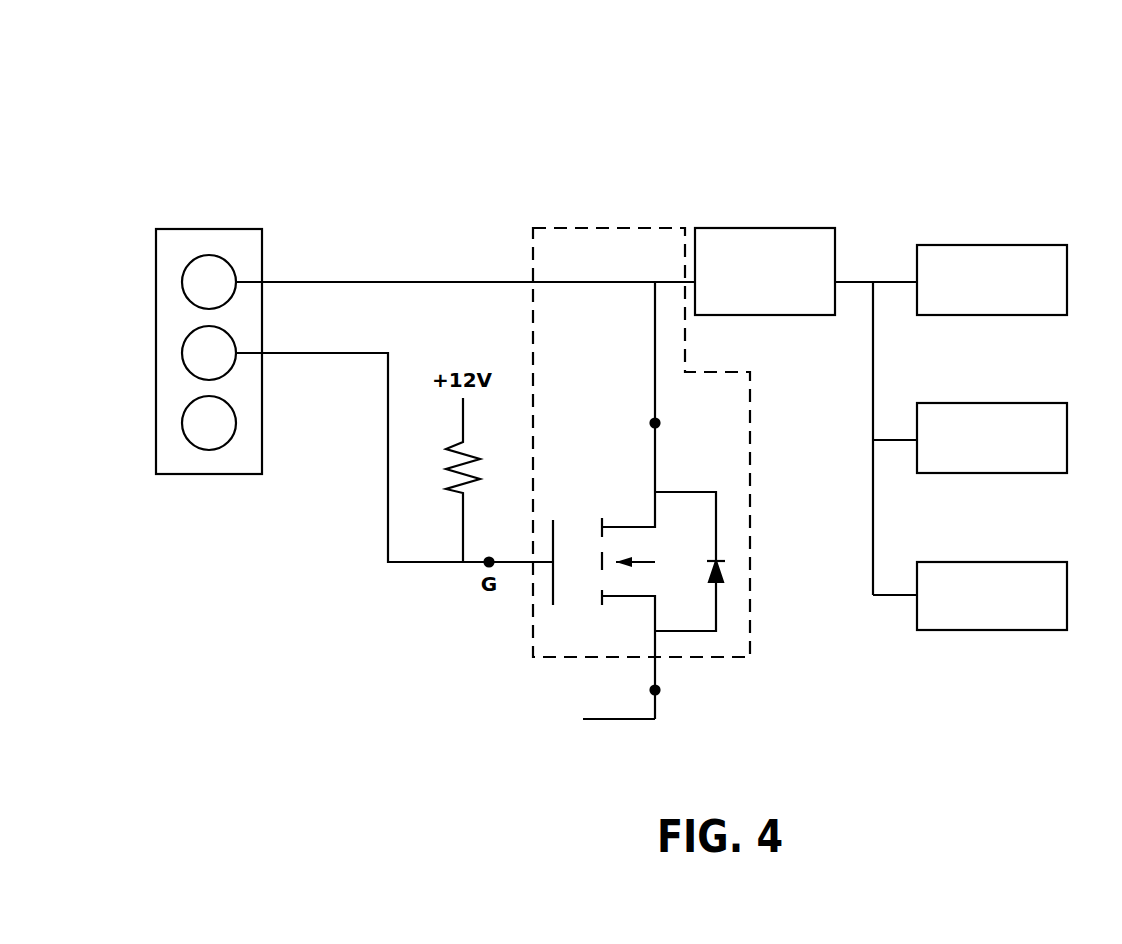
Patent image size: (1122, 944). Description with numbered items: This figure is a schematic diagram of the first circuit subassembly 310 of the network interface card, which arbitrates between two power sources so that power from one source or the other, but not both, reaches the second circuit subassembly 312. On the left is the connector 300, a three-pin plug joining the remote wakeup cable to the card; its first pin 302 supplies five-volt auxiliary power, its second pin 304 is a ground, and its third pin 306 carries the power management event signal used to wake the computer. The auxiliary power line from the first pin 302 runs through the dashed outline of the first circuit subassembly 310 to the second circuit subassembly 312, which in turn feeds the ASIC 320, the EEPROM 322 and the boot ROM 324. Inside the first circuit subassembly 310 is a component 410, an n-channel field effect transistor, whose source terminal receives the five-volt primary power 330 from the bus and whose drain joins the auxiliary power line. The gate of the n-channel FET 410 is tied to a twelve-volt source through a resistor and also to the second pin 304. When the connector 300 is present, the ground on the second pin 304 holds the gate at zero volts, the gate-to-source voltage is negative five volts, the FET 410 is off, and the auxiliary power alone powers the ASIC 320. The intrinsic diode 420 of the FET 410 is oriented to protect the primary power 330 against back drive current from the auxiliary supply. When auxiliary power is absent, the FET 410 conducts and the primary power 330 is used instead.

The connector 300 is at (210, 206).
The first pin 302 is at (193, 293).
The second pin 304 is at (193, 364).
The third pin 306 is at (193, 434).
The first circuit subassembly 310 is at (595, 210).
The second circuit subassembly 312 is at (768, 212).
The application specific integrated circuit 320 is at (973, 306).
The electrically erasable programmable ROM 322 is at (973, 464).
The boot ROM 324 is at (973, 621).
The +5V primary power 330 is at (500, 756).
The n-channel field effect transistor 410 is at (606, 612).
The diode 420 is at (738, 583).